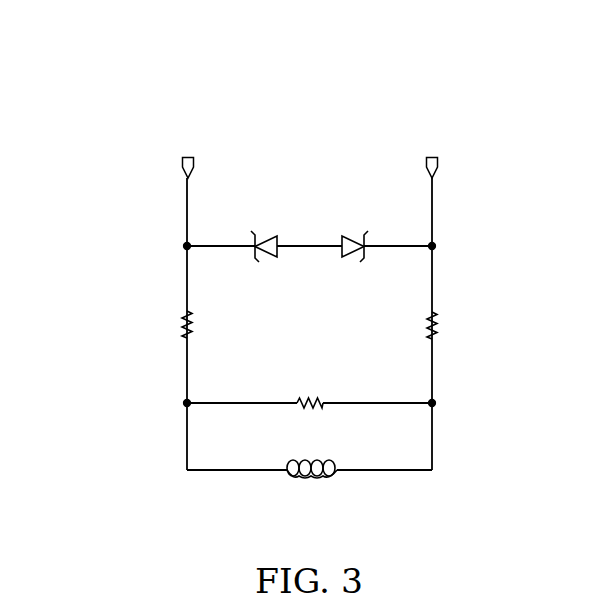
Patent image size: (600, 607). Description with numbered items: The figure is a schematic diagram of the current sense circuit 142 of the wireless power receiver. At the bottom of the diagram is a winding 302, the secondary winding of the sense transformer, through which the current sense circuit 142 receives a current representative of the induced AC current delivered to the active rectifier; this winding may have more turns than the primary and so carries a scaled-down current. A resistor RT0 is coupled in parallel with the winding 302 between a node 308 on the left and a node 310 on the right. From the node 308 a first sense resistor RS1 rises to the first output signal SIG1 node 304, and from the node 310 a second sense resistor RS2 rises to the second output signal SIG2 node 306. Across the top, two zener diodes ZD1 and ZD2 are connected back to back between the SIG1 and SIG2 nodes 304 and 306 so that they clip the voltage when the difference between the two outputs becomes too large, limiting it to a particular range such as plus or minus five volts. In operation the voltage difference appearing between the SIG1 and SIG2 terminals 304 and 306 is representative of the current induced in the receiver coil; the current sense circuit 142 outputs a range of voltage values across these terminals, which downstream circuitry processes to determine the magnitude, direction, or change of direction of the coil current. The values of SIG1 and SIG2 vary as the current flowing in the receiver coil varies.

The current sense circuit 142 is at (141, 112).
The winding 302 is at (310, 478).
The first output signal node 304 is at (182, 163).
The second output signal node 306 is at (437, 163).
The node 308 is at (183, 410).
The node 310 is at (436, 408).
The zener diode ZD1 is at (266, 235).
The zener diode ZD2 is at (354, 235).
The first sense resistor RS1 is at (166, 324).
The second sense resistor RS2 is at (454, 325).
The resistor RT0 is at (311, 389).
The first output signal SIG1 is at (188, 154).
The second output signal SIG2 is at (432, 154).